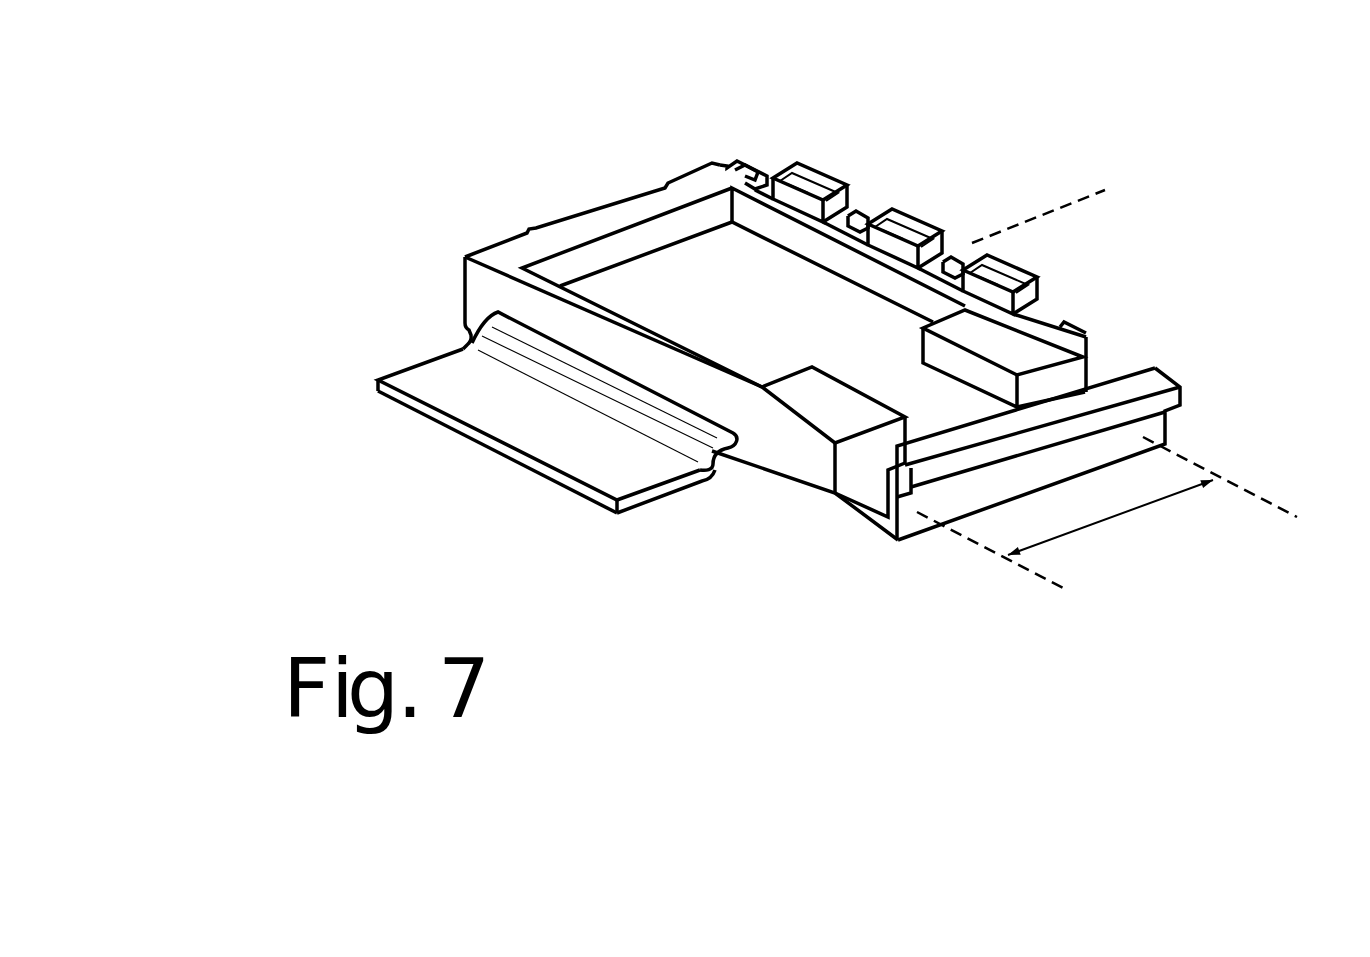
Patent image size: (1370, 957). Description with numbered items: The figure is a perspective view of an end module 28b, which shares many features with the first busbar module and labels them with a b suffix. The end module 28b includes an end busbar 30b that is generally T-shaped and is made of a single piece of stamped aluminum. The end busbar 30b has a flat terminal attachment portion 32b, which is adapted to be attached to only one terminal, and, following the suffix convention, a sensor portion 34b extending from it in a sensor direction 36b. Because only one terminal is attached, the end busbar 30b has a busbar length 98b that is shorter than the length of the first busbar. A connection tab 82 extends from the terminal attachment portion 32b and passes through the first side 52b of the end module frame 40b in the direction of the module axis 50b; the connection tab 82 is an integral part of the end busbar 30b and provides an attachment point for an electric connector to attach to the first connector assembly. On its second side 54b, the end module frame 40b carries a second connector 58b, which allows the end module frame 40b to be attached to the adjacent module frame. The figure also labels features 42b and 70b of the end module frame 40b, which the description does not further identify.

The end module 28b is at (405, 128).
The end busbar 30b is at (779, 306).
The terminal attachment portion 32b is at (686, 252).
The sensor portion 34b is at (944, 415).
The sensor direction 36b is at (1108, 553).
The end module frame 40b is at (492, 243).
The cavity 42b is at (642, 288).
The module axis 50b is at (1075, 200).
The first side 52b is at (782, 466).
The second side 54b is at (836, 253).
The second connector 58b is at (805, 136).
The slot 70b is at (870, 501).
The connection tab 82 is at (533, 428).
The busbar length 98b is at (1170, 505).